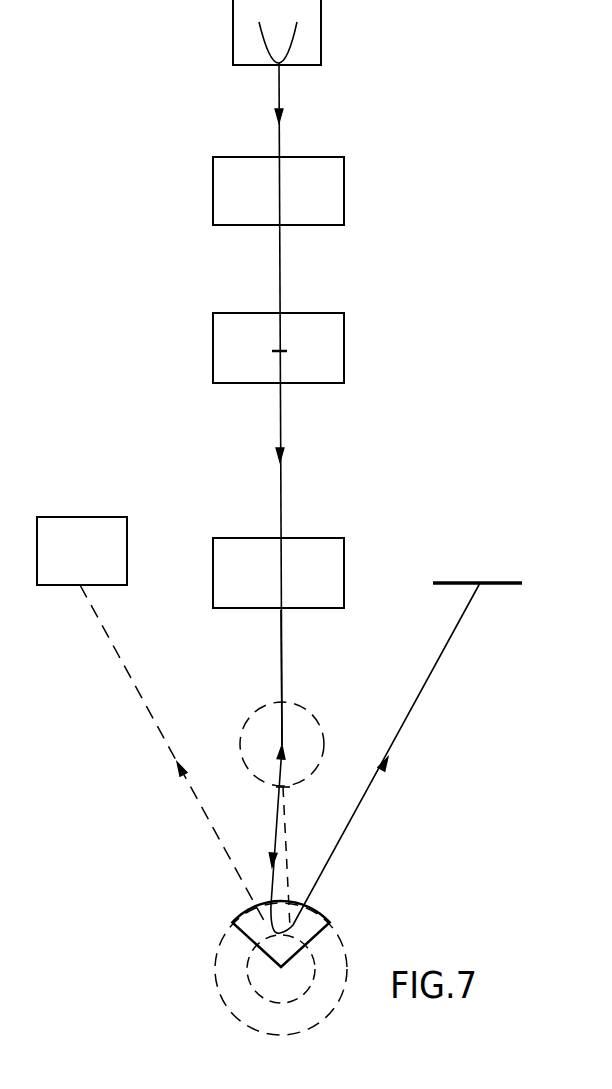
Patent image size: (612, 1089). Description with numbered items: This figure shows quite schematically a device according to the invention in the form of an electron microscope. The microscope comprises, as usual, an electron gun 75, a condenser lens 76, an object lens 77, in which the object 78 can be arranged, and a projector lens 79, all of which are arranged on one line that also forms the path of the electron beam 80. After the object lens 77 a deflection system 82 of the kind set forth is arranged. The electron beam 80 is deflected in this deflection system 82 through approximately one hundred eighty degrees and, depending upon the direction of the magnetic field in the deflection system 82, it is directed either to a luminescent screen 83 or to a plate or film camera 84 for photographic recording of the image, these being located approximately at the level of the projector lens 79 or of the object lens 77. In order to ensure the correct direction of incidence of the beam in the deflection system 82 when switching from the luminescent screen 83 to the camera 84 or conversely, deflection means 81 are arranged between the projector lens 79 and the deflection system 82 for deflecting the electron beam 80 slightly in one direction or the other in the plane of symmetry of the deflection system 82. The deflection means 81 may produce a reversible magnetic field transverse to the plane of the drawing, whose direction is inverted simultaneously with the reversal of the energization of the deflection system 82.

The electron gun 75 is at (328, 43).
The condenser lens 76 is at (344, 190).
The object lens 77 is at (344, 360).
The object 78 is at (288, 350).
The projector lens 79 is at (344, 552).
The electron beam 80 is at (281, 662).
The deflection means 81 is at (340, 716).
The deflection system 82 is at (322, 912).
The luminescent screen 83 is at (498, 583).
The plate or film camera 84 is at (127, 538).